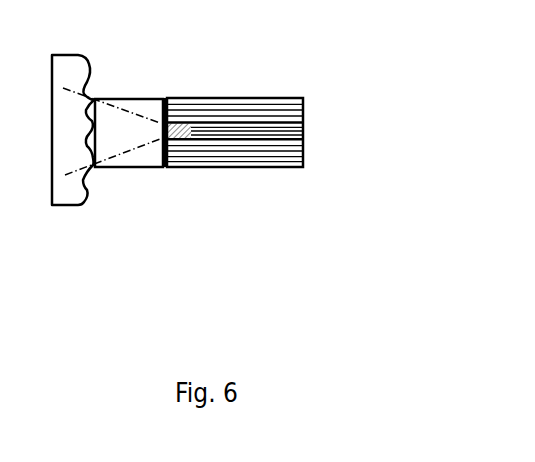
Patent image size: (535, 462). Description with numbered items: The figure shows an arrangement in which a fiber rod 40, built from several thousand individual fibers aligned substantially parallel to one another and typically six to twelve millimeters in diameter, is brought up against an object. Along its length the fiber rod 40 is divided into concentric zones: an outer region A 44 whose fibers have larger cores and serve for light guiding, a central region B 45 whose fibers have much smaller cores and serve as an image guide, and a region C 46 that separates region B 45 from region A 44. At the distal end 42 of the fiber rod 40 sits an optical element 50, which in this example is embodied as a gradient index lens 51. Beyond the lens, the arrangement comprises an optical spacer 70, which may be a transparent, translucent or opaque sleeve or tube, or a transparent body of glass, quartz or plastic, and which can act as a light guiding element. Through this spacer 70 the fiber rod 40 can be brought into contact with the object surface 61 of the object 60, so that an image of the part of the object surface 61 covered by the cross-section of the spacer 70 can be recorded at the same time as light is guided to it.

The object 60 is at (59, 206).
The object surface 61 is at (94, 166).
The optical spacer 70 is at (146, 168).
The distal end 42 is at (167, 168).
The optical element 50 is at (183, 137).
The gradient index lens (GRIN lens) 51 is at (278, 247).
The fiber rod 40 is at (282, 160).
The region A 44 is at (295, 132).
The region C 46 is at (298, 143).
The region B 45 is at (323, 227).